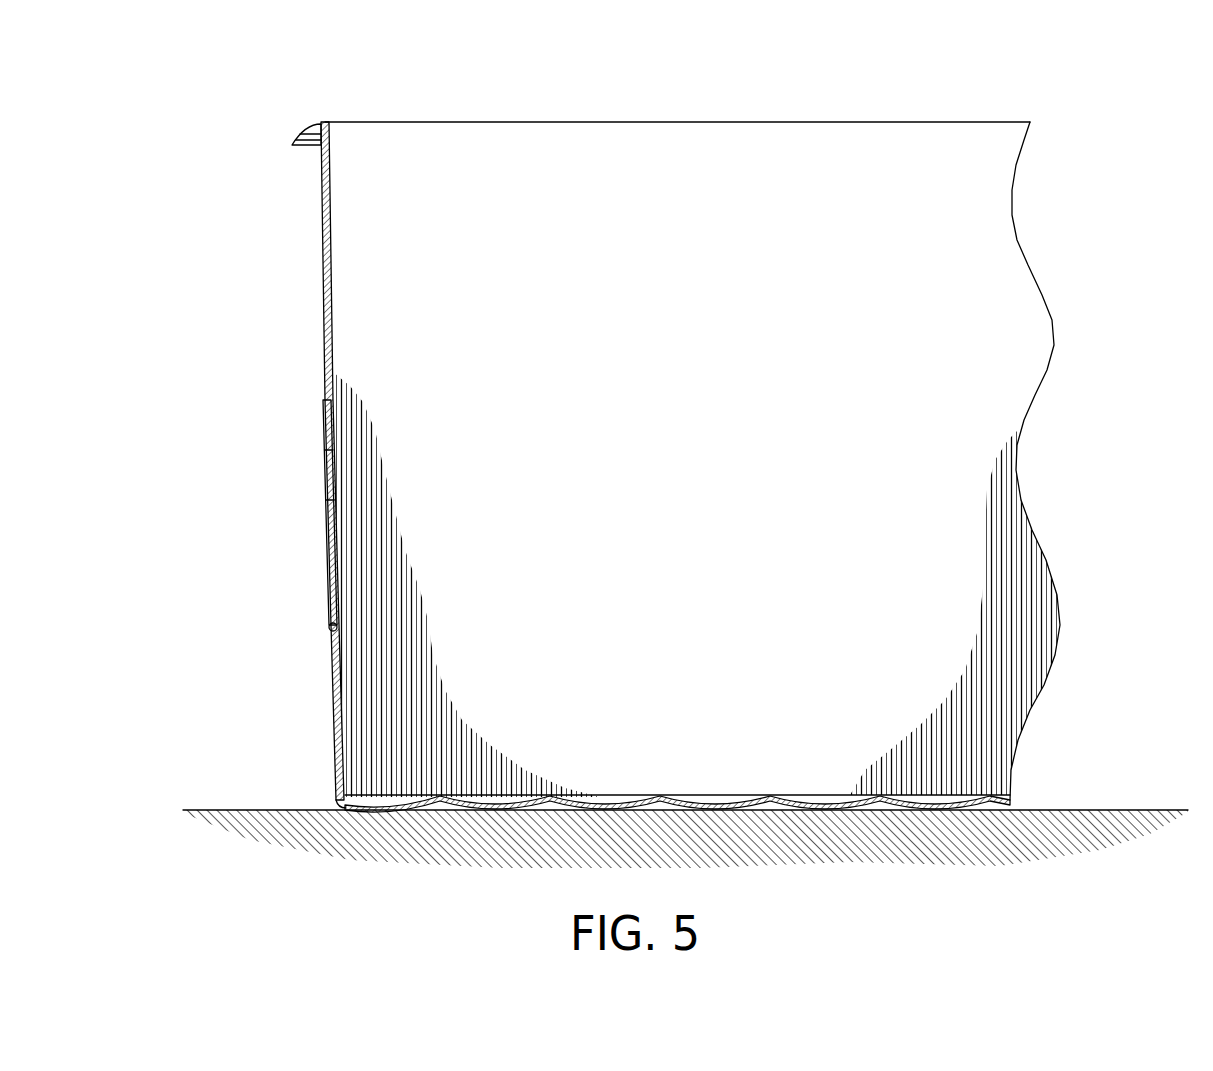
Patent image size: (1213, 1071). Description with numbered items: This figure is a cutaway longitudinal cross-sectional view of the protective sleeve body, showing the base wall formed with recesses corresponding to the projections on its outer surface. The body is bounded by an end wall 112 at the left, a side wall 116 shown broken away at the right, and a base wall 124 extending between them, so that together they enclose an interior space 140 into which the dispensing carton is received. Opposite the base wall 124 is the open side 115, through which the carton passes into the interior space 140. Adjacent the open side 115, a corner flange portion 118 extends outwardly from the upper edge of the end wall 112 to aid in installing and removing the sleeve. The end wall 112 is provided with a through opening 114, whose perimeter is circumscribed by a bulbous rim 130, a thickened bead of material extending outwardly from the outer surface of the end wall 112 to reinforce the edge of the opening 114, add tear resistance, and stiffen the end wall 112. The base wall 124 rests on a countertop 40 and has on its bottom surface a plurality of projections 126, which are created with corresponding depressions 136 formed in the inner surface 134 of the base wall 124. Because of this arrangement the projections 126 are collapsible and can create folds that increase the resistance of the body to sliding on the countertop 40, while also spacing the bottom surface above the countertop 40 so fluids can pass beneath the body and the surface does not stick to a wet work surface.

The countertop 40 is at (1130, 810).
The end wall 112 is at (322, 238).
The through opening 114 is at (337, 489).
The open side 115 is at (626, 122).
The side wall 116 is at (956, 165).
The corner flange portion 118 is at (300, 135).
The base wall 124 is at (777, 808).
The projection 126 is at (339, 810).
The bulbous rim 130 is at (325, 398).
The inner surface 134 is at (667, 796).
The depression 136 is at (506, 797).
The interior space 140 is at (778, 186).